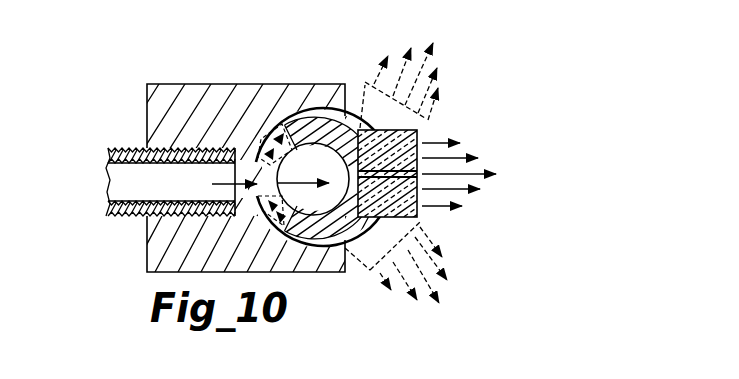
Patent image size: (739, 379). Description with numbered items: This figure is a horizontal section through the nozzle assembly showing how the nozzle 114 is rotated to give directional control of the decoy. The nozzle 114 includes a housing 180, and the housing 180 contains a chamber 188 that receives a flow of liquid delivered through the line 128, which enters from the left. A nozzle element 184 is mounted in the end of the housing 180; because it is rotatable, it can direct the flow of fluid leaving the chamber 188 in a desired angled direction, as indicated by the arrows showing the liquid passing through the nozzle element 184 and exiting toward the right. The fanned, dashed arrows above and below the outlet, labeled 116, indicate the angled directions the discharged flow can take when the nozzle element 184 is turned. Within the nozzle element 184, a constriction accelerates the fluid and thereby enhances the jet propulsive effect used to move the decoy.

The nozzle 114 is at (167, 70).
The line 128 is at (126, 147).
The housing 180 is at (332, 60).
The chamber 188 is at (258, 166).
The nozzle element 184 is at (356, 130).
The spray pattern 116 is at (418, 131).